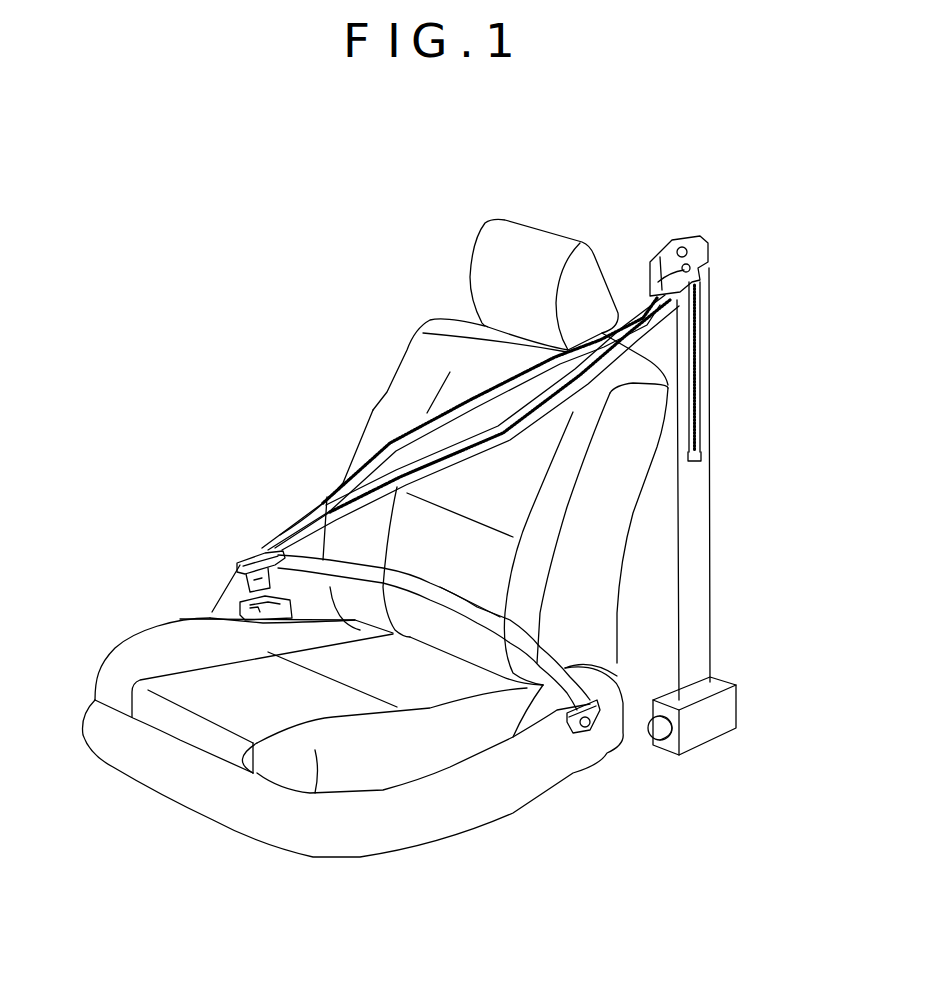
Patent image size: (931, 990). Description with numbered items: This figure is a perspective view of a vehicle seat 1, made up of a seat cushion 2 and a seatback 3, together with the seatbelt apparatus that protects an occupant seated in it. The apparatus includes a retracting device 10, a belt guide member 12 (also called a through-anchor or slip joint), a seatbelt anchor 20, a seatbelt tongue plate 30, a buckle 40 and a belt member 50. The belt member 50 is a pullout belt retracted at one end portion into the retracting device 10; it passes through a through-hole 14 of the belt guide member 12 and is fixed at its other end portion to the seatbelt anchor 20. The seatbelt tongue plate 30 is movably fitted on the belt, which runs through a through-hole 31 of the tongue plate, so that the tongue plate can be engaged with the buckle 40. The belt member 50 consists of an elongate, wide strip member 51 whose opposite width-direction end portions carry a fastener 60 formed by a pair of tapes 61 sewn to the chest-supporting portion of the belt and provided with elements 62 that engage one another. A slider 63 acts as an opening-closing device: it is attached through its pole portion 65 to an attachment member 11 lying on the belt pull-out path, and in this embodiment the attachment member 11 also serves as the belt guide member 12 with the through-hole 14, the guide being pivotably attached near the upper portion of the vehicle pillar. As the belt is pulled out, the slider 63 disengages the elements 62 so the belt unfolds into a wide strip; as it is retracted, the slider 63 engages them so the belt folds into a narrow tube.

The vehicle seat 1 is at (276, 432).
The seat cushion 2 is at (146, 617).
The seatback 3 is at (396, 350).
The retracting device 10 is at (723, 678).
The attachment member 11 is at (679, 266).
The belt guide member 12 is at (735, 203).
The through-hole 14 is at (702, 271).
The seatbelt anchor 20 is at (576, 740).
The seatbelt tongue plate 30 is at (232, 562).
The through-hole 31 is at (250, 549).
The buckle 40 is at (236, 607).
The belt member 50 is at (712, 500).
The wide strip member 51 is at (528, 398).
The fastener 60 is at (698, 390).
The tapes 61 is at (398, 460).
The elements 62 is at (455, 404).
The slider 63 is at (690, 267).
The pole portion 65 is at (688, 270).